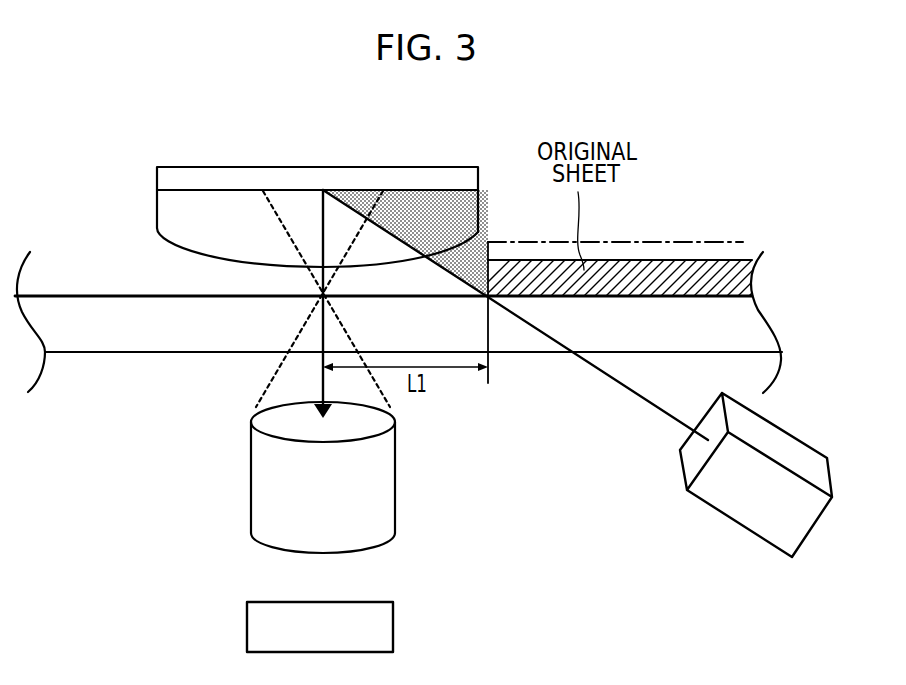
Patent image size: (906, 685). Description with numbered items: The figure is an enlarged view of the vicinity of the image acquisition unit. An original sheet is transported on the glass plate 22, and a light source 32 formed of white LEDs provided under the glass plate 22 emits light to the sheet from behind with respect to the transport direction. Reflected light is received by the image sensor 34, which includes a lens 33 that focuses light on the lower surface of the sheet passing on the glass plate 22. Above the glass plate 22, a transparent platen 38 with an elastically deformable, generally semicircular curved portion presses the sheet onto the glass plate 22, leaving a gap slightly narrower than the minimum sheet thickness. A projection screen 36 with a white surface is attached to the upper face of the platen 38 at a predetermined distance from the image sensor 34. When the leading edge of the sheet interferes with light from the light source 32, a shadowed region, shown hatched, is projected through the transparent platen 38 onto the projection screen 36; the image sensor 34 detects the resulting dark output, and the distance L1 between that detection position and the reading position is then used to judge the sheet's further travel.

The glass plate 22 is at (710, 317).
The light source 32 is at (779, 438).
The lens 33 is at (395, 478).
The image sensor 34 is at (393, 625).
The projection screen 36 is at (162, 176).
The platen 38 is at (162, 216).